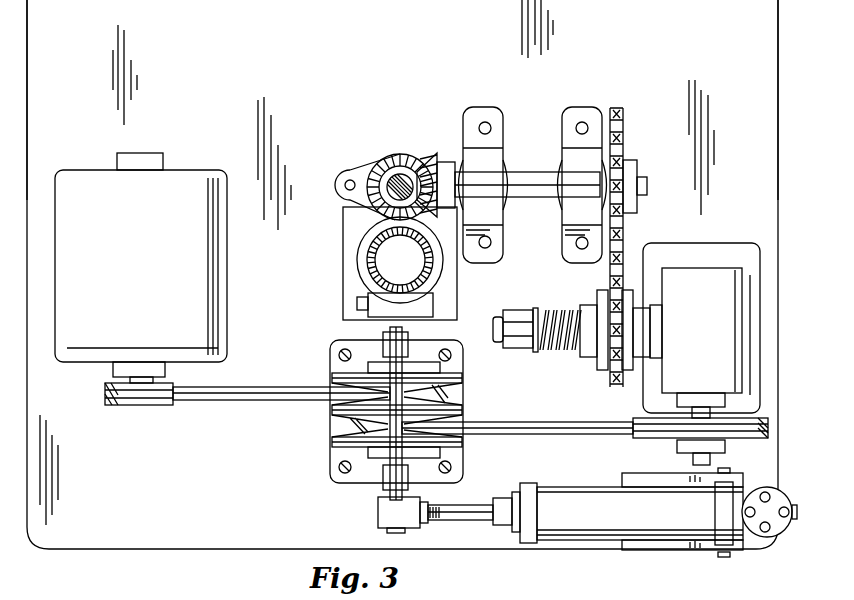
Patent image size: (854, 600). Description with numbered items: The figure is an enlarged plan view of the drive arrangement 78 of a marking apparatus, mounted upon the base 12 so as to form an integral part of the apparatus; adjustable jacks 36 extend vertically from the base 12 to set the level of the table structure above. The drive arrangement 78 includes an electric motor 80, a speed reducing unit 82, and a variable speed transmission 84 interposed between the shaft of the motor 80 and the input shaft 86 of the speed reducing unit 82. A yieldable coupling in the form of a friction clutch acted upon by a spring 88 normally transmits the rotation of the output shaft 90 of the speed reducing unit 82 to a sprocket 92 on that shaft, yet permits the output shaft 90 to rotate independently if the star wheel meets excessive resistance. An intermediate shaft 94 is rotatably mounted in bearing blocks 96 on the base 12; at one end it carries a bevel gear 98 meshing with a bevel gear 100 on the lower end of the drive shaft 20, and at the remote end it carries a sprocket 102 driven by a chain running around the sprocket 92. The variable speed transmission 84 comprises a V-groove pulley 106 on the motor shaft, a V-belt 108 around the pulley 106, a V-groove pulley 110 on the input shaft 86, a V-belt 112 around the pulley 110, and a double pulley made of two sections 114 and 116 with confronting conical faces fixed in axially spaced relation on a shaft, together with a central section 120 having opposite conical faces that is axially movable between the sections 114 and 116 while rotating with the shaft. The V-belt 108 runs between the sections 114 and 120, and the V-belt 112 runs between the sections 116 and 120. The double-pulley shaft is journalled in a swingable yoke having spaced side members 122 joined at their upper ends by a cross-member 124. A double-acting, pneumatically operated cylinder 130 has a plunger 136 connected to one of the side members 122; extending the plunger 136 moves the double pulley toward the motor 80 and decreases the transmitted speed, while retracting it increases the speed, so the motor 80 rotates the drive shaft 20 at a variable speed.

The base 12 is at (200, 548).
The drive shaft 20 is at (380, 188).
The adjustable jacks 36 is at (62, 2).
The drive arrangement 78 is at (372, 115).
The electric motor 80 is at (185, 178).
The speed reducing unit 82 is at (705, 272).
The variable speed transmission 84 is at (389, 420).
The input shaft 86 is at (712, 458).
The spring 88 is at (553, 350).
The output shaft 90 is at (502, 310).
The sprocket 92 is at (610, 390).
The intermediate shaft 94 is at (518, 178).
The bearing blocks 96 is at (560, 130).
The bevel gear 98 is at (445, 158).
The bevel gear 100 is at (404, 150).
The sprocket 102 is at (636, 160).
The V-groove pulley 106 is at (122, 405).
The V-belt 108 is at (228, 400).
The V-groove pulley 110 is at (634, 438).
The V-belt 112 is at (516, 434).
The pulley section 114 is at (342, 376).
The pulley section 116 is at (340, 447).
The central pulley section 120 is at (458, 410).
The side members 122 is at (386, 487).
The cross-member 124 is at (390, 455).
The pneumatically operated cylinder 130 is at (605, 523).
The plunger 136 is at (477, 512).